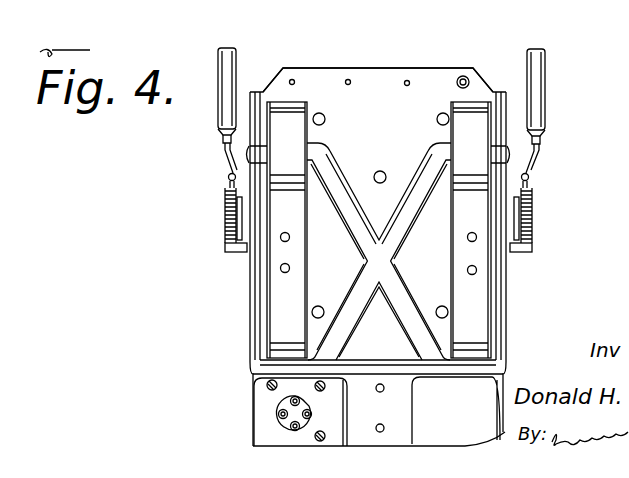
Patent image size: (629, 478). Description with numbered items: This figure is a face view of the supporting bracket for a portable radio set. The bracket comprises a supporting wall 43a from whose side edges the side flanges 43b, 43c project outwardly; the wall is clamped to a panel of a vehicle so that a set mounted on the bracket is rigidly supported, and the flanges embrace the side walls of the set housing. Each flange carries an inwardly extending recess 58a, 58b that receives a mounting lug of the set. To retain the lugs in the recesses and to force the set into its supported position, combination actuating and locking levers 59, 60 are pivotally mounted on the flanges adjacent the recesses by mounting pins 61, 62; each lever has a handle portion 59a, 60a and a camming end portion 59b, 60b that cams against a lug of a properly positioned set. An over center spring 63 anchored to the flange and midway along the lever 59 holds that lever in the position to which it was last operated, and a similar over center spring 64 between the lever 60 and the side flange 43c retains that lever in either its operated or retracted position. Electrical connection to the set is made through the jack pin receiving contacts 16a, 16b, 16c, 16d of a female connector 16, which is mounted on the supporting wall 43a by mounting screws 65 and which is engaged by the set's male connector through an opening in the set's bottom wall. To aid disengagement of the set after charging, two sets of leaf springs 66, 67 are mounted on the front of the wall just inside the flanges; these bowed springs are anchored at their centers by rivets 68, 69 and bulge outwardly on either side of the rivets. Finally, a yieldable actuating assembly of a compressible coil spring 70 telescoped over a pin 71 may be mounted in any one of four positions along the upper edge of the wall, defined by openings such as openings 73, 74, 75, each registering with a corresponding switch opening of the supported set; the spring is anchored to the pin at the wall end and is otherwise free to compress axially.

The female connector 16 is at (263, 420).
The jack pin receiving contact 16a is at (292, 429).
The jack pin receiving contact 16b is at (312, 414).
The jack pin receiving contact 16c is at (279, 413).
The jack pin receiving contact 16d is at (293, 398).
The supporting wall 43a is at (385, 91).
The side flange 43b is at (507, 297).
The side flange 43c is at (250, 312).
The recess 58a is at (533, 240).
The recess 58b is at (236, 250).
The combination actuating and locking lever 59 is at (532, 158).
The handle portion 59a is at (540, 97).
The camming end portion 59b is at (534, 216).
The combination actuating and locking lever 60 is at (222, 158).
The handle portion 60a is at (227, 65).
The camming end portion 60b is at (245, 225).
The mounting pin 61 is at (530, 210).
The mounting pin 62 is at (236, 209).
The over center spring 63 is at (535, 207).
The over center spring 64 is at (229, 190).
The mounting screw 65 is at (267, 384).
The set of leaf springs 66 is at (298, 207).
The set of leaf springs 67 is at (468, 212).
The rivet 68 is at (467, 270).
The rivet 69 is at (290, 268).
The compressible coil spring 70 is at (469, 78).
The pin 71 is at (465, 77).
The opening 73 is at (409, 80).
The opening 74 is at (350, 79).
The opening 75 is at (294, 79).